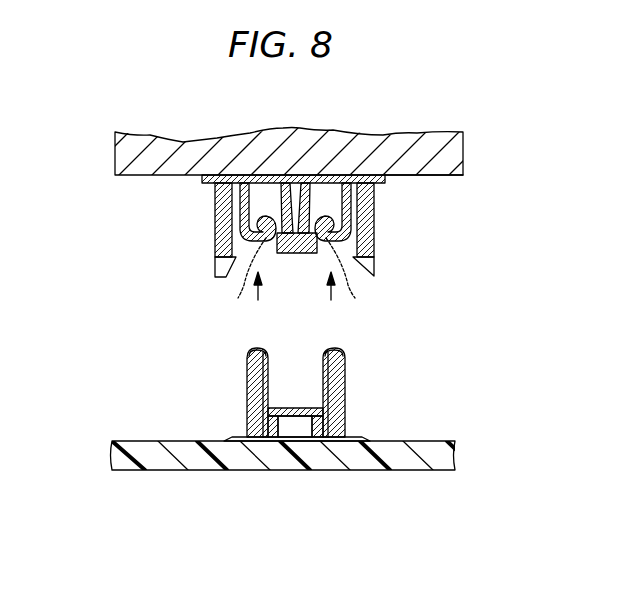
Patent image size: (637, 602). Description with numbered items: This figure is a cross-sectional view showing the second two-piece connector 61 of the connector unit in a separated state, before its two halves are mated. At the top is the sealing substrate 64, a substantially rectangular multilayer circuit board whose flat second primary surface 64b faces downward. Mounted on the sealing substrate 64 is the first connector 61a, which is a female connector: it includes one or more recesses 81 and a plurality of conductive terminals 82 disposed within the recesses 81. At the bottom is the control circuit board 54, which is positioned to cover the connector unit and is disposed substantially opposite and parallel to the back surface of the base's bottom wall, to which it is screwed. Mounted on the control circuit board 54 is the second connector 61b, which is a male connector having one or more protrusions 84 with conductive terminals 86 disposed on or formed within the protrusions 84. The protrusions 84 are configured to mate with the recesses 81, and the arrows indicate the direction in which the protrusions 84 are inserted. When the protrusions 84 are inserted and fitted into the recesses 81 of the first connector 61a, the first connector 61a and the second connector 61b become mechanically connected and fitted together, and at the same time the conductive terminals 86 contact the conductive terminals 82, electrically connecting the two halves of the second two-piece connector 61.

The control circuit board 54 is at (208, 472).
The second two-piece connector 61 is at (140, 227).
The first connector 61a is at (261, 180).
The second connector 61b is at (267, 386).
The sealing substrate 64 is at (152, 131).
The second primary surface 64b is at (440, 176).
The recesses 81 is at (296, 275).
The conductive terminals 82 is at (258, 173).
The protrusions 84 is at (250, 358).
The conductive terminals 86 is at (246, 363).